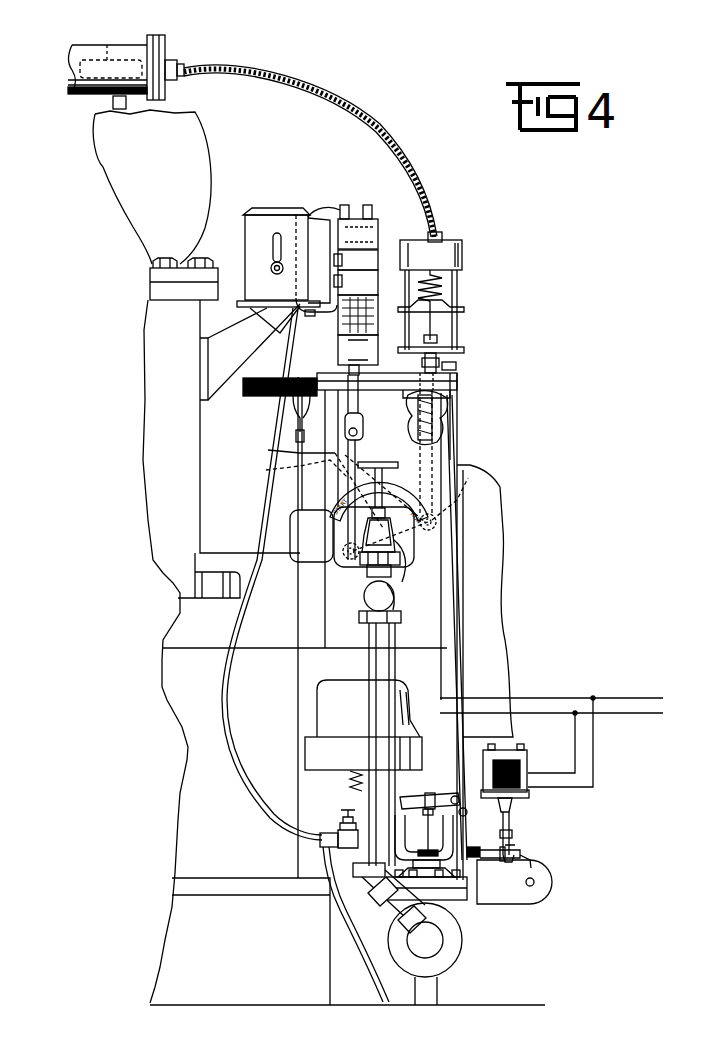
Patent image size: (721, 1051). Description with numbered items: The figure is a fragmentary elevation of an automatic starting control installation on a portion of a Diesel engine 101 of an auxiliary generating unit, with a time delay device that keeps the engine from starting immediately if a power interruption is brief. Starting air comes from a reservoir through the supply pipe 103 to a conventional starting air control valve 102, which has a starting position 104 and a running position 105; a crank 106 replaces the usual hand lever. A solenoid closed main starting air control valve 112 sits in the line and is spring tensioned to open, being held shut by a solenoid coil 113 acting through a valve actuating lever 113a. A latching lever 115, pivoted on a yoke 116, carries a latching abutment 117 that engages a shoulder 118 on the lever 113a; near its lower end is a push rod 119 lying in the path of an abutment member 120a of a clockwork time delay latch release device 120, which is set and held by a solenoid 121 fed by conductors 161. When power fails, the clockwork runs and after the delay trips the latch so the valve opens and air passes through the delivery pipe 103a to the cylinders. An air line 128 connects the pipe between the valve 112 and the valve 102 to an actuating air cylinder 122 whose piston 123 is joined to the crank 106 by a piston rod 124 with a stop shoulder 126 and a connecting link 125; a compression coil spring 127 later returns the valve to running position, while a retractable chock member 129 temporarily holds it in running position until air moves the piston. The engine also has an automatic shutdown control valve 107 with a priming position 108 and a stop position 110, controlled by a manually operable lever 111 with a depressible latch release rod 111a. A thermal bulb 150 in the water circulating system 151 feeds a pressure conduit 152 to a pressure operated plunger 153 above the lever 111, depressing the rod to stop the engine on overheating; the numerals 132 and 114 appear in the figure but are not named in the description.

The thermal bulb 150 is at (107, 45).
The engine water circulating system 151 is at (92, 98).
The pressure conduit 152 is at (378, 96).
The actuating air cylinder 122 is at (384, 234).
The piston 123 is at (332, 298).
The compression coil spring 127 is at (337, 333).
The retractable chock member 129 is at (345, 375).
The pressure operated plunger 153 is at (440, 330).
The air line 128 is at (290, 424).
The manually operable control lever 111 is at (457, 385).
The depressible latch release rod 111a is at (450, 404).
The Diesel engine 101 is at (448, 426).
The piston rod 124 is at (359, 404).
The stop shoulder 126 is at (365, 419).
The pin 132 is at (378, 428).
The stop position 110 is at (360, 452).
The starting position 104 is at (293, 471).
The connecting link 125 is at (335, 496).
The running position 105 is at (443, 480).
The priming position 108 is at (470, 478).
The automatic shutdown control valve 107 is at (436, 523).
The crank 106 is at (345, 562).
The starting air control valve 102 is at (400, 560).
The delivery pipe 103a is at (380, 640).
The closing and holding solenoid coil 113 is at (337, 730).
The valve actuating lever 113a is at (445, 792).
The latching abutment 117 is at (448, 780).
The conductors 161 is at (642, 712).
The solenoid 121 is at (528, 770).
The shoulder 118 is at (445, 807).
The latching lever 115 is at (468, 823).
The push rod 119 is at (493, 848).
The abutment member 120a is at (527, 862).
The time delay latch release device 120 is at (528, 895).
The yoke 116 is at (396, 833).
The stem 114 is at (429, 843).
The main starting air control valve 112 is at (443, 910).
The starting air supply pipe 103 is at (438, 992).